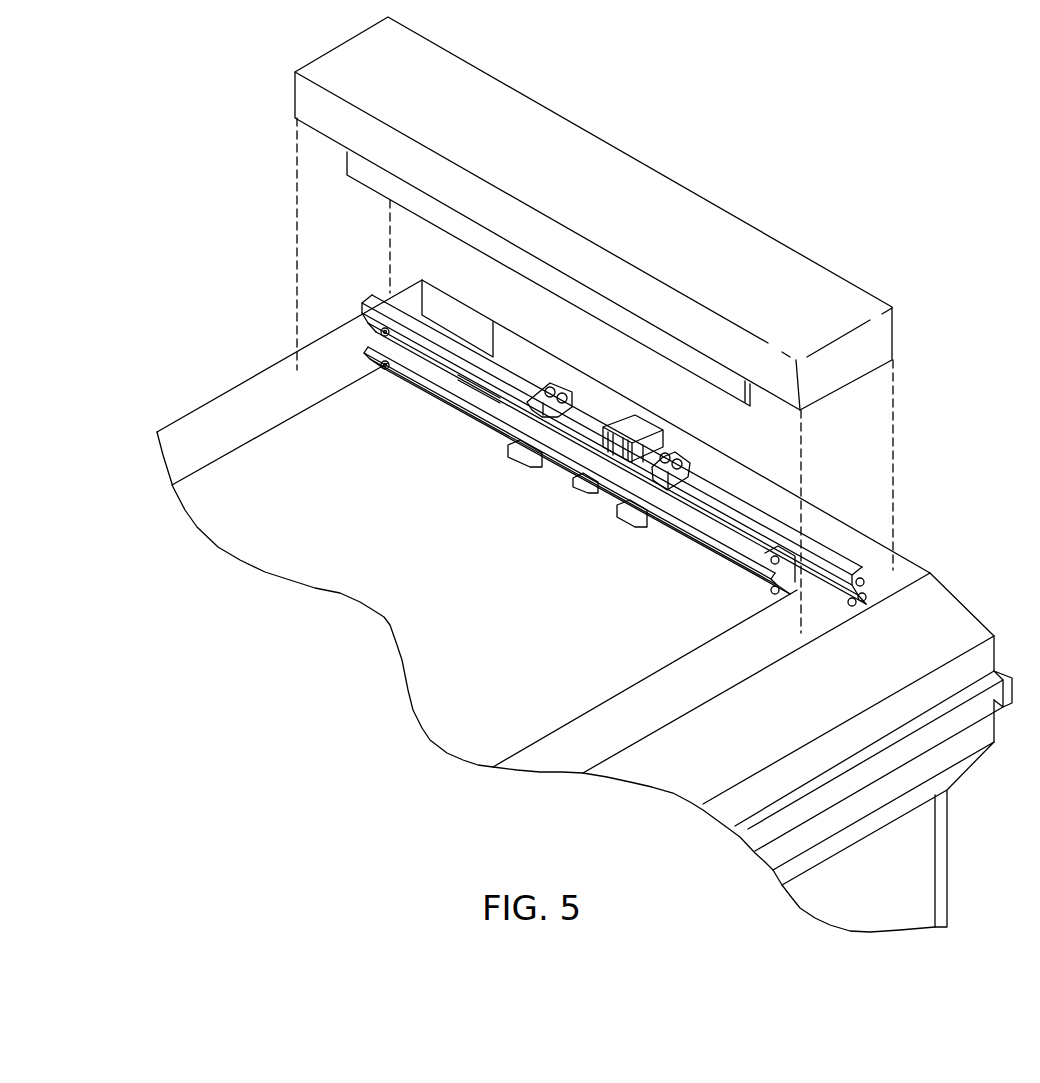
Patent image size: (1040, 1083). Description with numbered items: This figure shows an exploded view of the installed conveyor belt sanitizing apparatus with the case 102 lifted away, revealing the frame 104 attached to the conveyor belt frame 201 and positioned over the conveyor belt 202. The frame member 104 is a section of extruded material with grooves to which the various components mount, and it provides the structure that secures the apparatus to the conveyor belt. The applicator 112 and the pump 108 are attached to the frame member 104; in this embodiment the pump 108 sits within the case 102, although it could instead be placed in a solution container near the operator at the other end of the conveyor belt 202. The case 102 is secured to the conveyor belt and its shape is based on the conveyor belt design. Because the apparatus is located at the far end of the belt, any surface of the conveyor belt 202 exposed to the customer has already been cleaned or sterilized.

The case 102 is at (722, 248).
The frame member 104 is at (362, 303).
The applicator 112 is at (377, 363).
The pump 108 is at (647, 430).
The conveyor belt frame 201 is at (882, 587).
The conveyor belt 202 is at (403, 568).